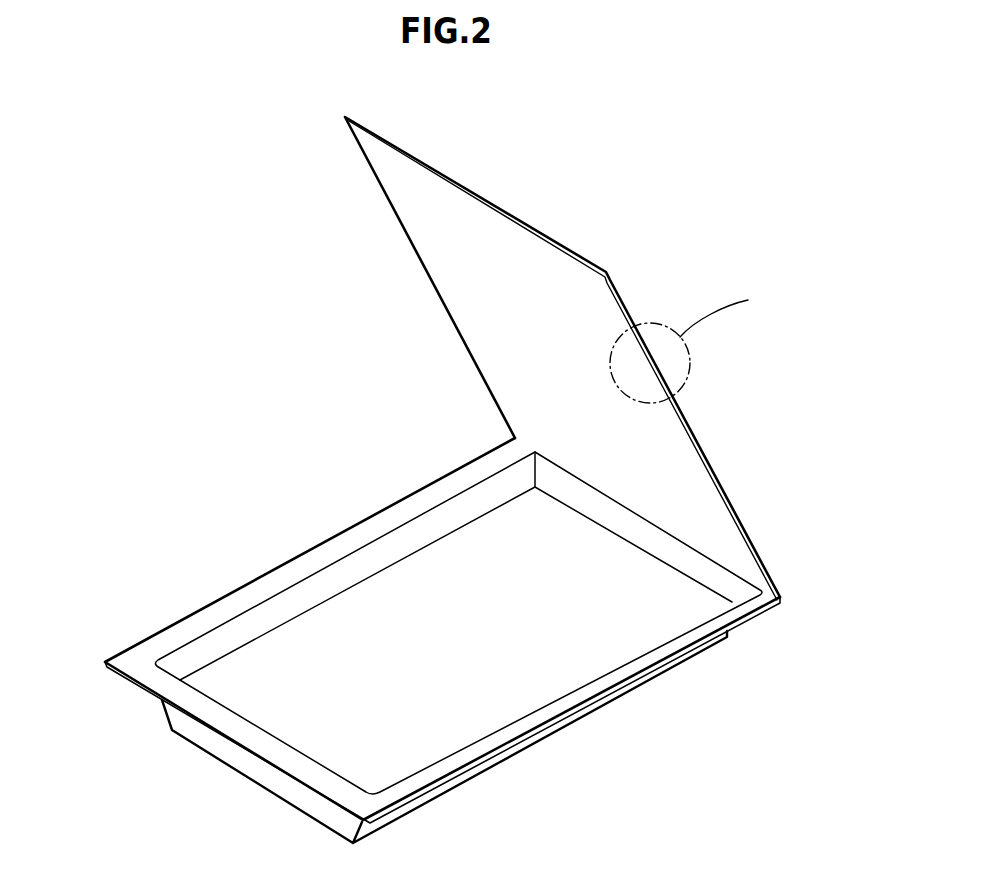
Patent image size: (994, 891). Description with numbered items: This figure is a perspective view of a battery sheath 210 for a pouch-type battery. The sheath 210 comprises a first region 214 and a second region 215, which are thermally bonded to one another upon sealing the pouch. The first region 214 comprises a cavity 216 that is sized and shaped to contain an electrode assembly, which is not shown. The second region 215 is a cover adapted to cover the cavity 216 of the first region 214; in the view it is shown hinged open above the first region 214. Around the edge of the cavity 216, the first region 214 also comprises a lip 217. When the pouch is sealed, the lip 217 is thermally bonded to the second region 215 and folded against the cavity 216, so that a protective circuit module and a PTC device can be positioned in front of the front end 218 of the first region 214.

The battery sheath 210 is at (311, 451).
The first region 214 is at (706, 699).
The second region 215 is at (358, 197).
The cavity 216 is at (357, 622).
The lip 217 is at (198, 622).
The front end 218 is at (247, 763).